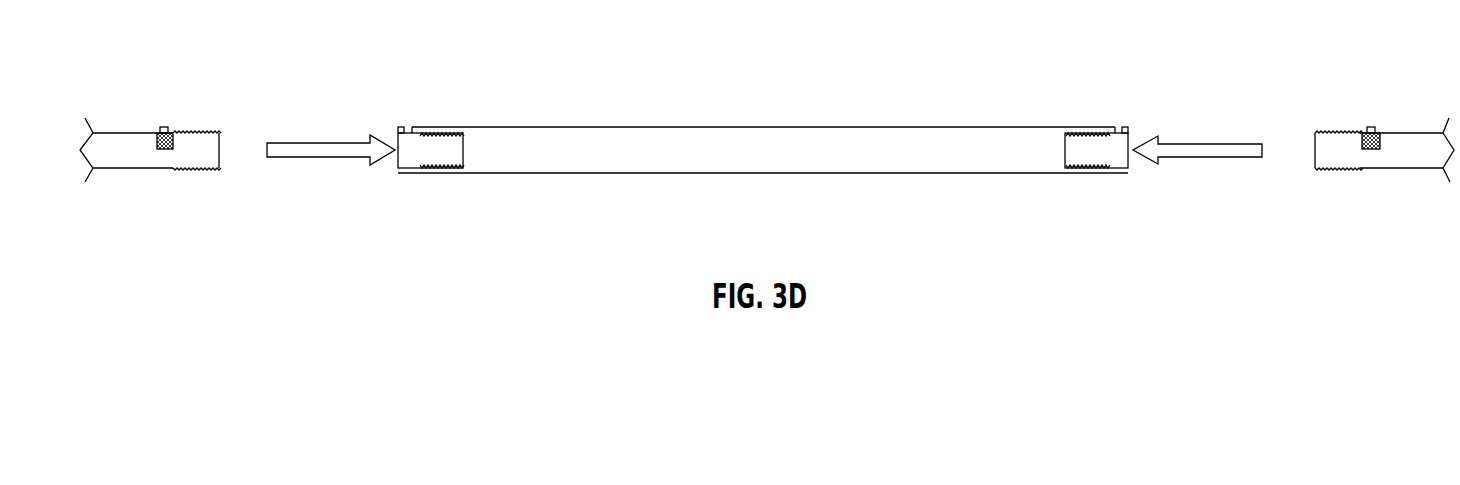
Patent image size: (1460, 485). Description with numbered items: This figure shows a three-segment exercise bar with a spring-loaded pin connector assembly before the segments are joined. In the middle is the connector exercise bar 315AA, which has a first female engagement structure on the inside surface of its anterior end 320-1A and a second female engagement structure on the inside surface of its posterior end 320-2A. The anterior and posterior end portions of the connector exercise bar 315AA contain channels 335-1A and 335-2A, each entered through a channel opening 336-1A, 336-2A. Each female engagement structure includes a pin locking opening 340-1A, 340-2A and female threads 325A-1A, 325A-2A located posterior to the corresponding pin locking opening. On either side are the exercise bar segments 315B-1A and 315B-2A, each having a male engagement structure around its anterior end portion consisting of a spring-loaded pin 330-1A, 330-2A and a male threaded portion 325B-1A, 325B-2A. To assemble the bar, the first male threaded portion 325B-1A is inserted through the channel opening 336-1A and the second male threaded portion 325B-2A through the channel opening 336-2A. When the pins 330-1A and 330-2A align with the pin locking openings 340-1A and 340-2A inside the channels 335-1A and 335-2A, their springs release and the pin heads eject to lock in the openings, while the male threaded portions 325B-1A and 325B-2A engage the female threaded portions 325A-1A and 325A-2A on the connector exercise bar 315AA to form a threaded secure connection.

The exercise bar segment 315B-1A is at (100, 142).
The spring-loaded pin 330-1A is at (174, 111).
The male threaded portion 325B-1A is at (194, 168).
The channel opening 336-1A is at (395, 138).
The pin locking opening 340-1A is at (412, 114).
The anterior end 320-1A is at (502, 114).
The channel 335-1A is at (410, 161).
The female thread 325A-1A is at (456, 168).
The connector exercise bar 315AA is at (722, 133).
The posterior end 320-2A is at (1033, 128).
The pin locking opening 340-2A is at (1122, 127).
The channel opening 336-2A is at (1131, 140).
The female thread 325A-2A is at (1070, 168).
The channel 335-2A is at (1117, 163).
The exercise bar segment 315B-2A is at (1432, 140).
The spring-loaded pin 330-2A is at (1368, 127).
The male threaded portion 325B-2A is at (1342, 168).